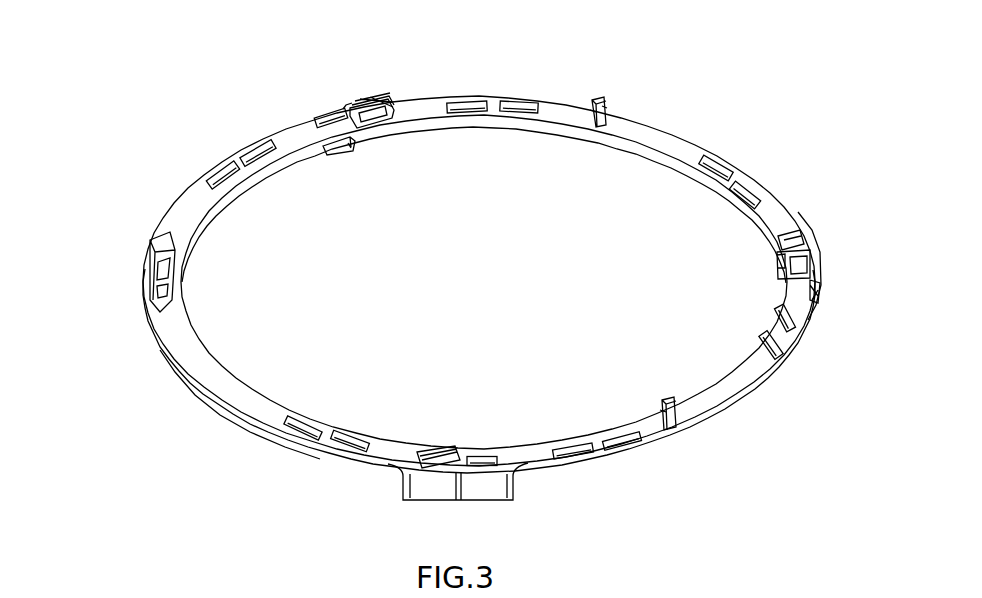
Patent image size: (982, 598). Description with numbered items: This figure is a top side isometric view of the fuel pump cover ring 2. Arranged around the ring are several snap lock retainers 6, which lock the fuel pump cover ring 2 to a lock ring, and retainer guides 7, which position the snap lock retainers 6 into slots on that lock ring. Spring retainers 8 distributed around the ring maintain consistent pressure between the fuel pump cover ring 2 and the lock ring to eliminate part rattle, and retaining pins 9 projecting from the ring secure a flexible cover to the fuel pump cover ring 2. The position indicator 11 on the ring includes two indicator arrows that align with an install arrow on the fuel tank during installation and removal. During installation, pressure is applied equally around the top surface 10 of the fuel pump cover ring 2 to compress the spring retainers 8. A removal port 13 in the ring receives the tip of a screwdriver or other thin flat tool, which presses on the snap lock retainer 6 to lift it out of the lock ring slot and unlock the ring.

The fuel pump cover ring 2 is at (793, 90).
The snap lock retainer 6 is at (363, 100).
The retainer guide 7 is at (340, 150).
The spring retainer 8 is at (518, 100).
The retaining pin 9 is at (594, 100).
The top surface 10 is at (735, 387).
The position indicator 11 is at (148, 246).
The removal port 13 is at (375, 125).